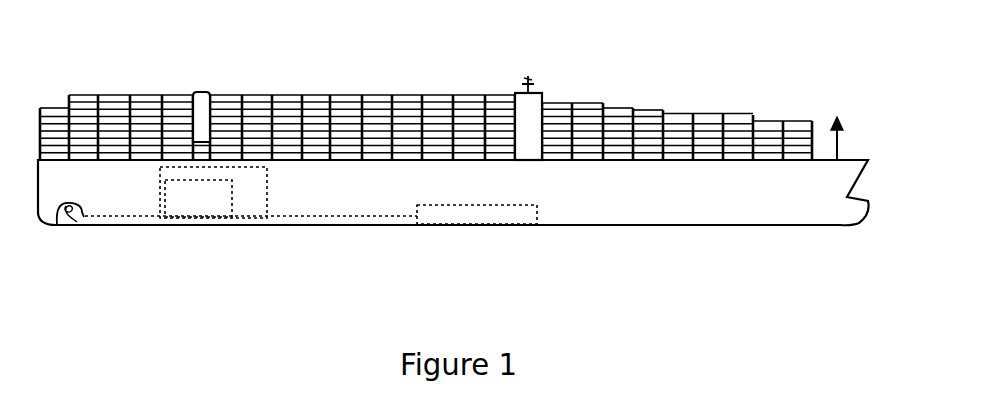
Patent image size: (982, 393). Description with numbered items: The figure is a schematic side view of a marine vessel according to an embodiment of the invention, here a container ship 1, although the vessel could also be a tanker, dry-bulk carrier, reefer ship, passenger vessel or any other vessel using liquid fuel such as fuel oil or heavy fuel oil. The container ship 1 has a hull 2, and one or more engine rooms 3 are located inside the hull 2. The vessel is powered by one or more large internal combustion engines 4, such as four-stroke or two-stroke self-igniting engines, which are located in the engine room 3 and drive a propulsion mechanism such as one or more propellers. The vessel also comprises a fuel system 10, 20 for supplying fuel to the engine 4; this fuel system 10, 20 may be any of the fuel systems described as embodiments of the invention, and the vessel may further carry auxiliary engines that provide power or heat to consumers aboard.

The container ship 1 is at (722, 76).
The hull 2 is at (652, 203).
The engine room 3 is at (254, 203).
The internal combustion engine 4 is at (207, 211).
The fuel system 10 is at (311, 244).
The fuel system 20 is at (462, 236).